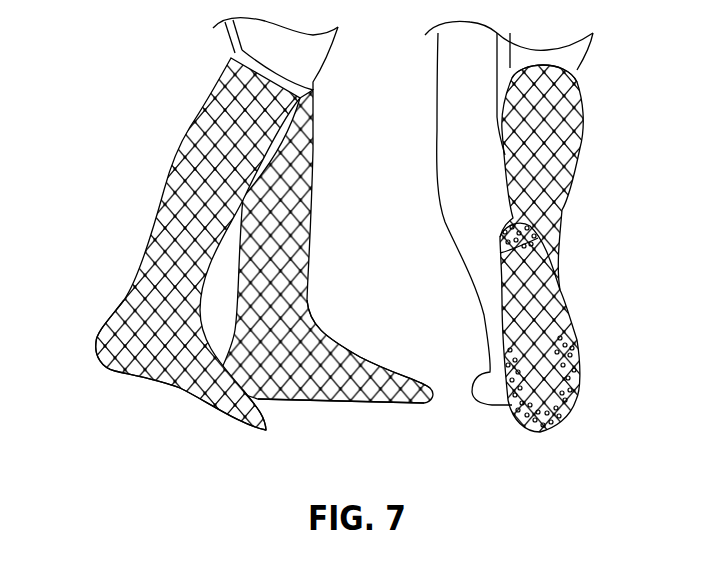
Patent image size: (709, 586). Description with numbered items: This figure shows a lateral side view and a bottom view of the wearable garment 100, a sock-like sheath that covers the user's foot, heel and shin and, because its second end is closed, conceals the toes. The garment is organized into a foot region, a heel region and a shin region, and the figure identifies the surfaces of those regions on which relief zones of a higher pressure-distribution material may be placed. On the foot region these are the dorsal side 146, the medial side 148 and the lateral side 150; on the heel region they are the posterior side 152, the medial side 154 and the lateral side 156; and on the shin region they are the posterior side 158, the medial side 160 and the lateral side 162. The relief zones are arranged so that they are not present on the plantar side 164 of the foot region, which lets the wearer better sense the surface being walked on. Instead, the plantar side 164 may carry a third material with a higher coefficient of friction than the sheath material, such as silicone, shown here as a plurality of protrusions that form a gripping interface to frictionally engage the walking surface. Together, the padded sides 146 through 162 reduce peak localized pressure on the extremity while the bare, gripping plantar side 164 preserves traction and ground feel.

The wearable garment 100 is at (102, 116).
The dorsal side of the foot region 146 is at (318, 351).
The medial side of the foot region 148 is at (343, 383).
The lateral side of the foot region 150 is at (177, 384).
The posterior side of the heel region 152 is at (545, 200).
The medial side of the heel region 154 is at (260, 382).
The lateral side of the heel region 156 is at (100, 328).
The posterior side of the shin region 158 is at (542, 108).
The medial side of the shin region 160 is at (294, 197).
The lateral side of the shin region 162 is at (192, 168).
The plantar side of the foot region 164 is at (545, 333).